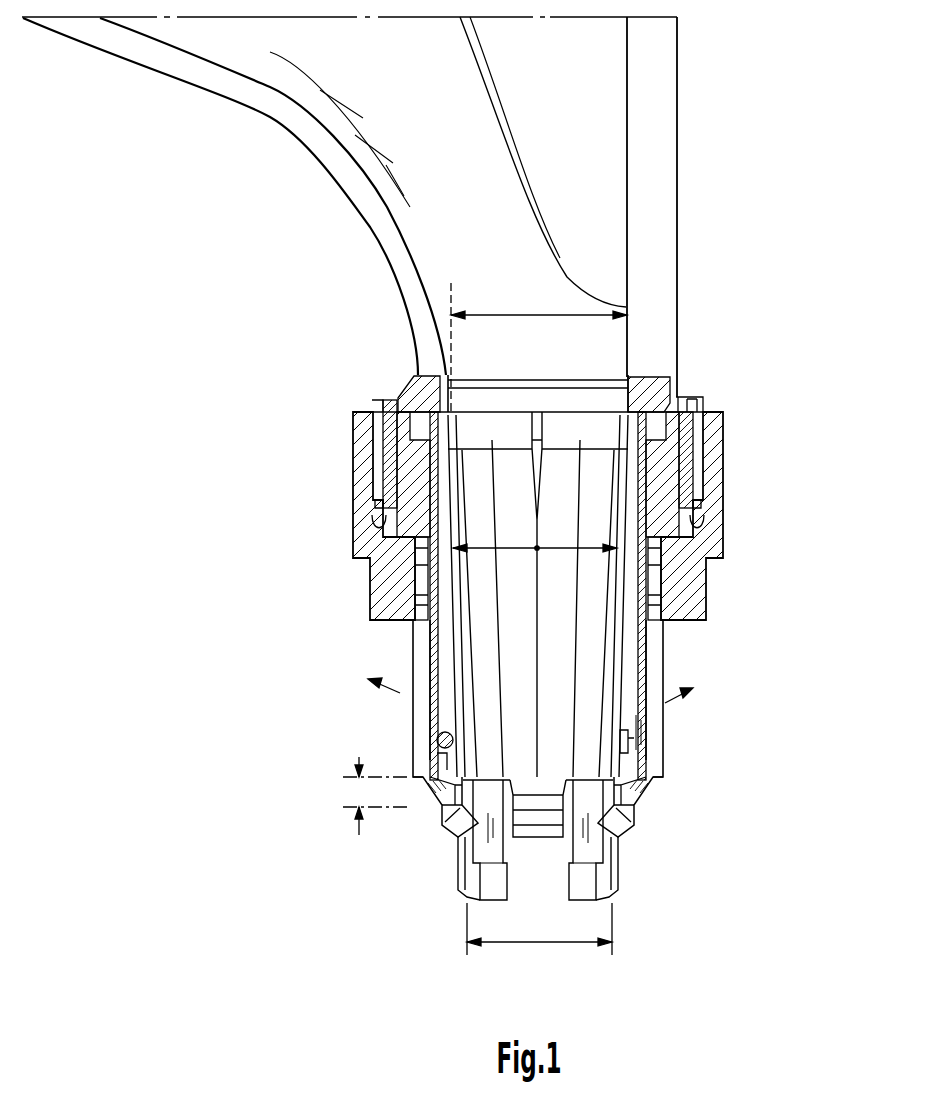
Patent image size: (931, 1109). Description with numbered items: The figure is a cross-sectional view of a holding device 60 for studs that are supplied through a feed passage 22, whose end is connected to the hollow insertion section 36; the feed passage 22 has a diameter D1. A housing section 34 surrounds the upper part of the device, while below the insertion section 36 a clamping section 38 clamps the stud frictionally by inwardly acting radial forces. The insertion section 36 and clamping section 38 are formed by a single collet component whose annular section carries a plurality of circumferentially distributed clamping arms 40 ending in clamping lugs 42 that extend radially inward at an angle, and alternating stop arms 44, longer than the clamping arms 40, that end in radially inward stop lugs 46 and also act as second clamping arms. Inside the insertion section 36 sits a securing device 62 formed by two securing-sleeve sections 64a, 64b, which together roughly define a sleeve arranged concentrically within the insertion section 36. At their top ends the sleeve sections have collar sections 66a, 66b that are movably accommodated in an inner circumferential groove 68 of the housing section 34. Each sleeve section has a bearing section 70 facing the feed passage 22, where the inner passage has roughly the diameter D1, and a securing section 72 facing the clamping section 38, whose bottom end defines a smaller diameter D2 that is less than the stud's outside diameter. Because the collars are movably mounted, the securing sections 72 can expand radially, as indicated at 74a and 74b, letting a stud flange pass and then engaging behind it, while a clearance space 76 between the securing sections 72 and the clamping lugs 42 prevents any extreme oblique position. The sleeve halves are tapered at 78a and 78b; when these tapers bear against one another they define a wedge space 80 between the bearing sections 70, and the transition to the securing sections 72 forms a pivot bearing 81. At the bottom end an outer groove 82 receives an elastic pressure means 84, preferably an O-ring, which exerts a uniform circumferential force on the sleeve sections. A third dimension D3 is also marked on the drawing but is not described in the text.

The feed passage 22 is at (203, 38).
The housing section 34 is at (655, 450).
The insertion section 36 is at (398, 589).
The clamping section 38 is at (664, 826).
The clamping arms 40 is at (377, 708).
The clamping lugs 42 is at (453, 835).
The stop arms 44 is at (458, 867).
The stop lugs 46 is at (463, 905).
The holding device 60 is at (303, 443).
The securing device 62 is at (652, 652).
The securing-sleeve section 64a is at (440, 642).
The securing-sleeve section 64b is at (650, 502).
The collar section 66a is at (400, 392).
The collar section 66b is at (668, 413).
The inner circumferential groove 68 is at (672, 415).
The bearing section 70 is at (416, 490).
The securing section 72 is at (478, 683).
The radial expansion 74a is at (410, 688).
The radial expansion 74b is at (580, 697).
The clearance space 76 is at (376, 796).
The taper 78a is at (540, 573).
The taper 78b is at (528, 621).
The wedge space 80 is at (547, 403).
The pivot bearing 81 is at (553, 608).
The outer groove 82 is at (627, 743).
The elastic pressure means 84 is at (437, 738).
The diameter of the feed passage D1 is at (537, 317).
The diameter at bottom end of securing section D2 is at (562, 947).
The diameter D3 is at (540, 573).